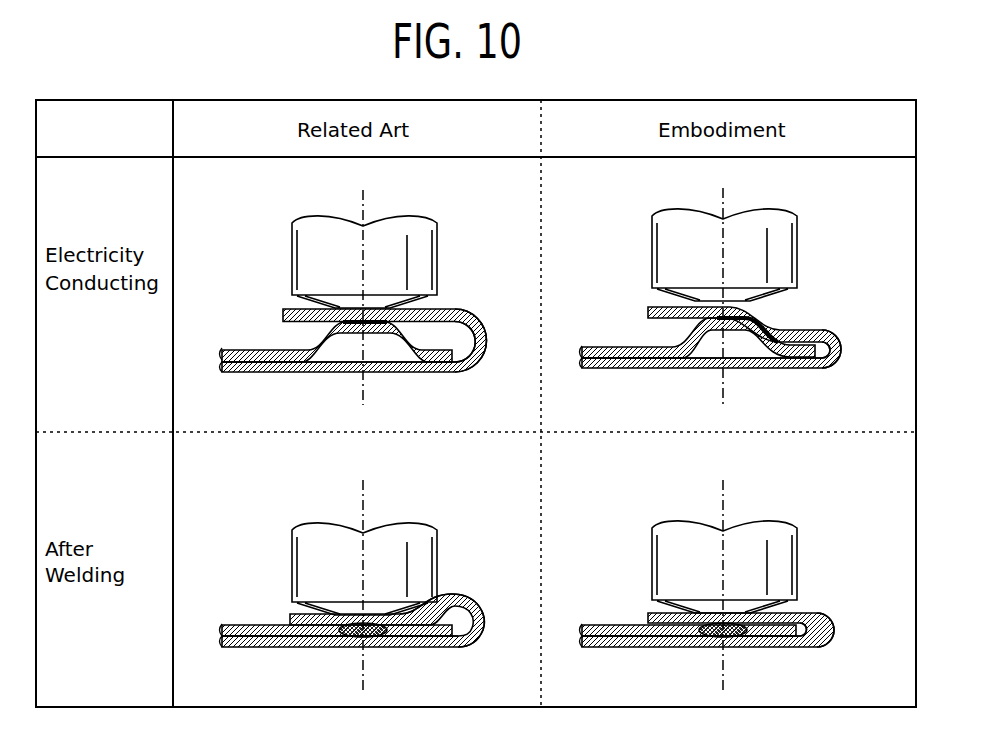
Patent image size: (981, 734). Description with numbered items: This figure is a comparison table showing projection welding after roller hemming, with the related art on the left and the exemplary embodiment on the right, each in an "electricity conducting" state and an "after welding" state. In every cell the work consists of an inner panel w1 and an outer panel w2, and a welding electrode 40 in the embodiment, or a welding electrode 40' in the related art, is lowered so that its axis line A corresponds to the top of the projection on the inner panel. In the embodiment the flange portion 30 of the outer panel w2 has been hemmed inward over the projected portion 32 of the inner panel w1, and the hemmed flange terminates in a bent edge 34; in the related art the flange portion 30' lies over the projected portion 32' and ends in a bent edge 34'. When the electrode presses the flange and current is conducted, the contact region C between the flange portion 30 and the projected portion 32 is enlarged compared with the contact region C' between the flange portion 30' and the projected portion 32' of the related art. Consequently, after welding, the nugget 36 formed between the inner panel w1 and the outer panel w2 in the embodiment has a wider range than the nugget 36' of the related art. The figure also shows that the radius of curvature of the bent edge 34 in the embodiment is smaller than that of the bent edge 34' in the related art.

The welding electrode 40 is at (701, 411).
The welding electrode 40' is at (337, 415).
The flange portion 30 is at (711, 458).
The flange portion 30' is at (354, 458).
The projected portion 32 is at (698, 336).
The projected portion 32' is at (337, 339).
The bent edge 34 is at (833, 469).
The bent edge 34' is at (460, 464).
The nugget 36 is at (717, 599).
The nugget 36' is at (354, 599).
The contact region C is at (747, 297).
The contact region C' is at (363, 287).
The axis line A is at (544, 425).
The inner panel w1 is at (614, 626).
The outer panel w2 is at (609, 648).